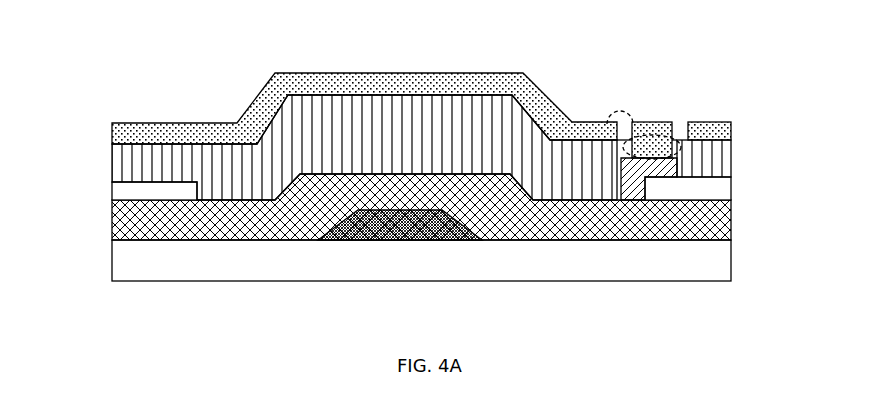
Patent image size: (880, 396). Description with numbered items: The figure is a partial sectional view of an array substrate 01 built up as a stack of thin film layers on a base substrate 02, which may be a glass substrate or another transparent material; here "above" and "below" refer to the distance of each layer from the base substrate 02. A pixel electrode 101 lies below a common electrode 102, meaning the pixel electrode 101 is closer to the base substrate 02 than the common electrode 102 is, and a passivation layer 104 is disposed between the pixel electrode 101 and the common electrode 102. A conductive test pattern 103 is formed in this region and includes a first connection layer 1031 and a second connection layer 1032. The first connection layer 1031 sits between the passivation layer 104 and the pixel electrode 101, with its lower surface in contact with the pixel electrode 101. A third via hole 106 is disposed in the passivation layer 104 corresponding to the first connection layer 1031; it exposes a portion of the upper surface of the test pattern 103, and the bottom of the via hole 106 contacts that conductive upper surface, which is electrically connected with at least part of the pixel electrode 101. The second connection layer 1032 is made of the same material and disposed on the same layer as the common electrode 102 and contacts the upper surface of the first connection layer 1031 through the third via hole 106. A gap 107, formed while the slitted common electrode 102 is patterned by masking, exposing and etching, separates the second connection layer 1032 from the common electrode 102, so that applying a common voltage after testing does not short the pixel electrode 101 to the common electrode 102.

The array substrate 01 is at (69, 50).
The base substrate 02 is at (123, 268).
The pixel electrode 101 is at (123, 190).
The common electrode 102 is at (123, 130).
The test pattern 103 is at (797, 143).
The first connection layer 1031 is at (672, 163).
The second connection layer 1032 is at (667, 148).
The passivation layer 104 is at (123, 157).
The third via hole 106 is at (657, 138).
The gap 107 is at (623, 113).